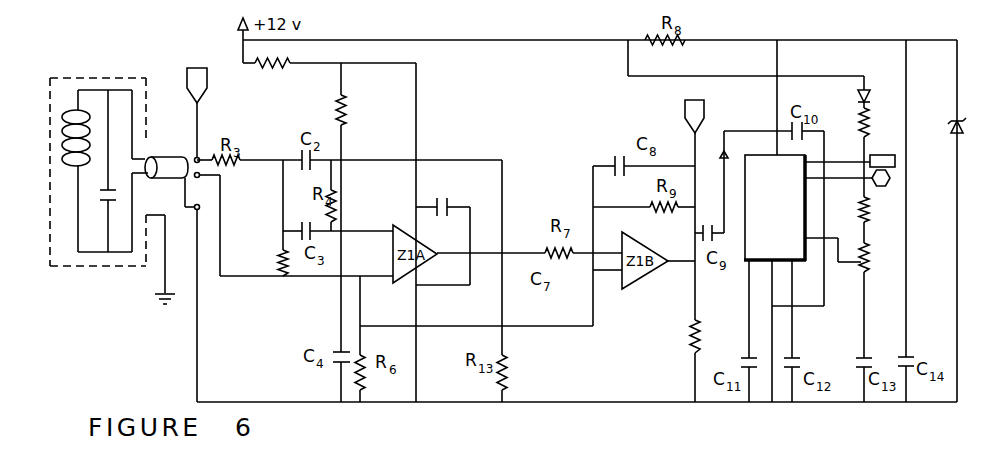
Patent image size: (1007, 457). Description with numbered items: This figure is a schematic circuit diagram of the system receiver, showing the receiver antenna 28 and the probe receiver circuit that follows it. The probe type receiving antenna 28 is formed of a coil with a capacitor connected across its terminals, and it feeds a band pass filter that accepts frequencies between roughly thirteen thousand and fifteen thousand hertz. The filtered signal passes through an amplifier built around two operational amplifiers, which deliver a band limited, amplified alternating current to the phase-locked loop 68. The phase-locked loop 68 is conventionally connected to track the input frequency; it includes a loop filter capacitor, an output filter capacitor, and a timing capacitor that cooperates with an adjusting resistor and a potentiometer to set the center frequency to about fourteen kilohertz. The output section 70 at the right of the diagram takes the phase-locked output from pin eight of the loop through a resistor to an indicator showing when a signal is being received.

The receiver antenna 28 is at (72, 86).
The phase-locked loop 68 is at (752, 228).
The output circuit 70 is at (881, 163).